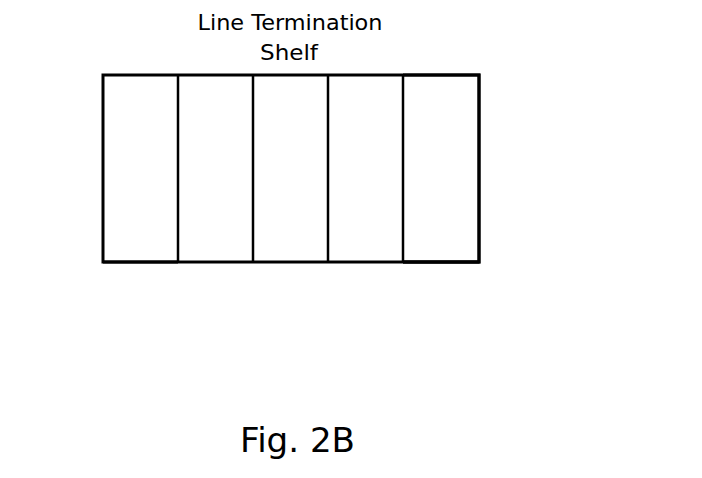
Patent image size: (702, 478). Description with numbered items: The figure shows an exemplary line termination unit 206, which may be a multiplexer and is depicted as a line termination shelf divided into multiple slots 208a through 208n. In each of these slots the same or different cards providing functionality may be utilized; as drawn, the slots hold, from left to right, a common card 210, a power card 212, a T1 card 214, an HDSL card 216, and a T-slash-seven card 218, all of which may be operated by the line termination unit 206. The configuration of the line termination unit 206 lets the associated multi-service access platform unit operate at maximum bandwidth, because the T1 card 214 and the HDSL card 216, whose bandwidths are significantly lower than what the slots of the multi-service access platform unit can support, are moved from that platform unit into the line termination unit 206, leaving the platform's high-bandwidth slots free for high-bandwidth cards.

The line termination unit 206 is at (480, 112).
The slot 208a is at (140, 262).
The slot 208n is at (460, 262).
The common card 210 is at (130, 118).
The power card 212 is at (207, 118).
The T1 card 214 is at (285, 203).
The HDSL card 216 is at (375, 223).
The T/7 card 218 is at (455, 205).